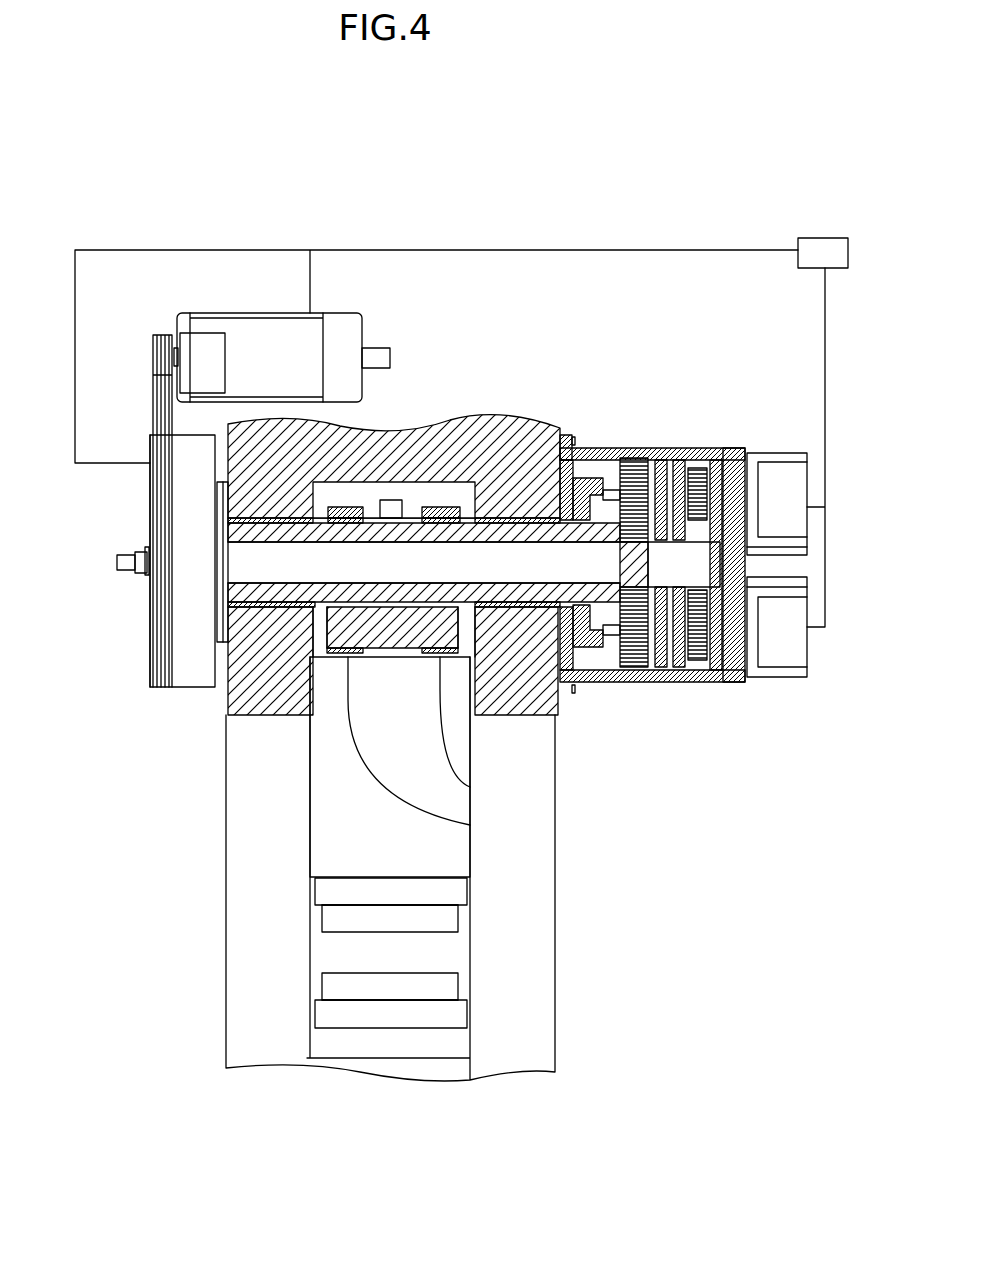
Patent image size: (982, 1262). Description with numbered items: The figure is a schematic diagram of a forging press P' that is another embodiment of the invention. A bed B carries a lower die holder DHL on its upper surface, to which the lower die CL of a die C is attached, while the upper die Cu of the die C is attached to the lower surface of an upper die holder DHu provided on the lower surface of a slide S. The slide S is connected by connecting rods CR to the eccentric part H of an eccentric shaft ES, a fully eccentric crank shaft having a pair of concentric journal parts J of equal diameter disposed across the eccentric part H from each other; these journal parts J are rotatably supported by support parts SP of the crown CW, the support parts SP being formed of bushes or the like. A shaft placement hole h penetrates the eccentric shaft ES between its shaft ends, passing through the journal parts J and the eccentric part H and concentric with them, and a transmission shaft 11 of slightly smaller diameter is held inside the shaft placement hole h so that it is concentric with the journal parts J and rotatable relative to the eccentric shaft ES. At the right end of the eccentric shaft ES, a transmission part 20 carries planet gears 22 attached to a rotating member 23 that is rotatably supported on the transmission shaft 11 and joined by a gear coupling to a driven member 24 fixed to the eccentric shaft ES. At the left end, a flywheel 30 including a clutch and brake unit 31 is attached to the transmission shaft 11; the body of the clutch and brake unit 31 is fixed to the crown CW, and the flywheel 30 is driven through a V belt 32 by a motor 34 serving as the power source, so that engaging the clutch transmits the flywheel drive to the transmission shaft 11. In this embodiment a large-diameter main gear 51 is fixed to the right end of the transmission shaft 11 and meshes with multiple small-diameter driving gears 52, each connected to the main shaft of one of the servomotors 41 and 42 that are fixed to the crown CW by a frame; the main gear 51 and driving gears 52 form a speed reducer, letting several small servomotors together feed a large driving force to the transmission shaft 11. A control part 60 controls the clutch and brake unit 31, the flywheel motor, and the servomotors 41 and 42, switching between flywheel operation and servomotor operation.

The forging press P' is at (450, 415).
The control part 60 is at (815, 238).
The motor 34 is at (272, 332).
The V belt 32 is at (153, 397).
The clutch and brake unit 31 is at (141, 447).
The flywheel 30 is at (173, 690).
The transmission shaft 11 is at (250, 549).
The shaft placement hole h is at (262, 577).
The crown CW is at (518, 455).
The eccentric shaft ES is at (498, 366).
The journal parts J is at (348, 505).
The eccentric part H is at (408, 515).
The support parts SP is at (262, 521).
The bed B is at (455, 1056).
The slide S is at (448, 858).
The connecting rods CR is at (470, 787).
The upper die holder DHu is at (452, 890).
The upper die Cu is at (452, 920).
The lower die CL is at (452, 985).
The die C is at (640, 934).
The lower die holder DHL is at (452, 1015).
The transmission part 20 is at (660, 442).
The rotating member 23 is at (608, 447).
The driven member 24 is at (608, 682).
The planet gears 22 is at (645, 676).
The driving gears 52 is at (700, 458).
The main gear 51 is at (735, 450).
The servomotor 42 is at (800, 455).
The servomotor 41 is at (790, 680).